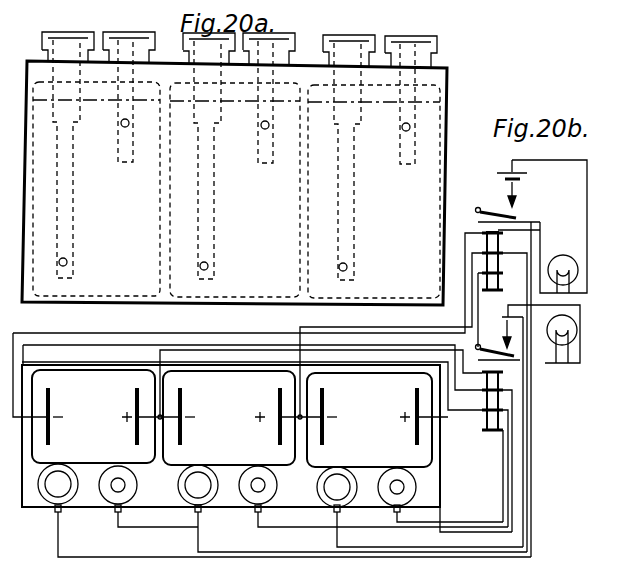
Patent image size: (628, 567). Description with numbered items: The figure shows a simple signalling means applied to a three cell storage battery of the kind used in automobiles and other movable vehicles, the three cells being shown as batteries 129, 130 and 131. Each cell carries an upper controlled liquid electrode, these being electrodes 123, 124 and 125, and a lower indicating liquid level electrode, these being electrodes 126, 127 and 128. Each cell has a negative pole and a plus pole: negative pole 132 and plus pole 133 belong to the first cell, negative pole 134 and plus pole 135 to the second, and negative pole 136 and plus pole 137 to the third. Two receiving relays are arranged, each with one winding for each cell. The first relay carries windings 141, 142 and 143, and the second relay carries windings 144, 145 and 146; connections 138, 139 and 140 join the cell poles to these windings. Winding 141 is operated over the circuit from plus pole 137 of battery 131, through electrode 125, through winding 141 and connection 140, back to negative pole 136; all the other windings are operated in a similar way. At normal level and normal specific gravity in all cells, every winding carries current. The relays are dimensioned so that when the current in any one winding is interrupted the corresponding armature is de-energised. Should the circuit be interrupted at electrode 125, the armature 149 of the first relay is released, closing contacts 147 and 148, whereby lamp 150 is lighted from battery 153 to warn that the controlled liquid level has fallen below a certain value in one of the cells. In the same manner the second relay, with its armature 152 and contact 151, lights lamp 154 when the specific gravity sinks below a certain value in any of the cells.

In FIG. 20A, the upper controlled liquid electrode 123 is at (122, 126).
In FIG. 20B, the upper controlled liquid electrode 123 is at (115, 512).
In FIG. 20A, the upper controlled liquid electrode 124 is at (262, 128).
In FIG. 20B, the upper controlled liquid electrode 124 is at (255, 512).
In FIG. 20A, the upper controlled liquid electrode 125 is at (403, 130).
In FIG. 20B, the upper controlled liquid electrode 125 is at (394, 512).
In FIG. 20A, the indicating liquid level electrode 126 is at (67, 259).
In FIG. 20B, the indicating liquid level electrode 126 is at (57, 512).
In FIG. 20A, the indicating liquid level electrode 127 is at (208, 263).
In FIG. 20B, the indicating liquid level electrode 127 is at (194, 512).
In FIG. 20A, the indicating liquid level electrode 128 is at (347, 264).
In FIG. 20B, the indicating liquid level electrode 128 is at (333, 512).
In FIG. 20B, the battery cell 129 is at (67, 463).
In FIG. 20B, the battery cell 130 is at (230, 460).
In FIG. 20B, the battery 131 is at (363, 465).
In FIG. 20B, the negative pole 132 is at (50, 397).
In FIG. 20B, the plus pole 133 is at (136, 397).
In FIG. 20B, the negative pole 134 is at (183, 398).
In FIG. 20B, the plus pole 135 is at (278, 398).
In FIG. 20B, the negative pole 136 is at (332, 403).
In FIG. 20B, the plus pole 137 is at (415, 433).
In FIG. 20B, the connection 138 is at (14, 337).
In FIG. 20B, the connection 139 is at (158, 352).
In FIG. 20B, the connection 140 is at (300, 360).
In FIG. 20B, the winding 141 is at (498, 420).
In FIG. 20B, the winding 142 is at (498, 400).
In FIG. 20B, the winding 143 is at (503, 378).
In FIG. 20B, the winding 144 is at (498, 280).
In FIG. 20B, the winding 145 is at (498, 262).
In FIG. 20B, the winding 146 is at (498, 244).
In FIG. 20B, the contact 147 is at (476, 346).
In FIG. 20B, the contact 148 is at (499, 342).
In FIG. 20B, the armature 149 is at (500, 323).
In FIG. 20B, the lamp 150 is at (542, 352).
In FIG. 20B, the contact 151 is at (478, 208).
In FIG. 20B, the armature 152 is at (518, 204).
In FIG. 20B, the battery 153 is at (519, 177).
In FIG. 20B, the lamp 154 is at (576, 257).